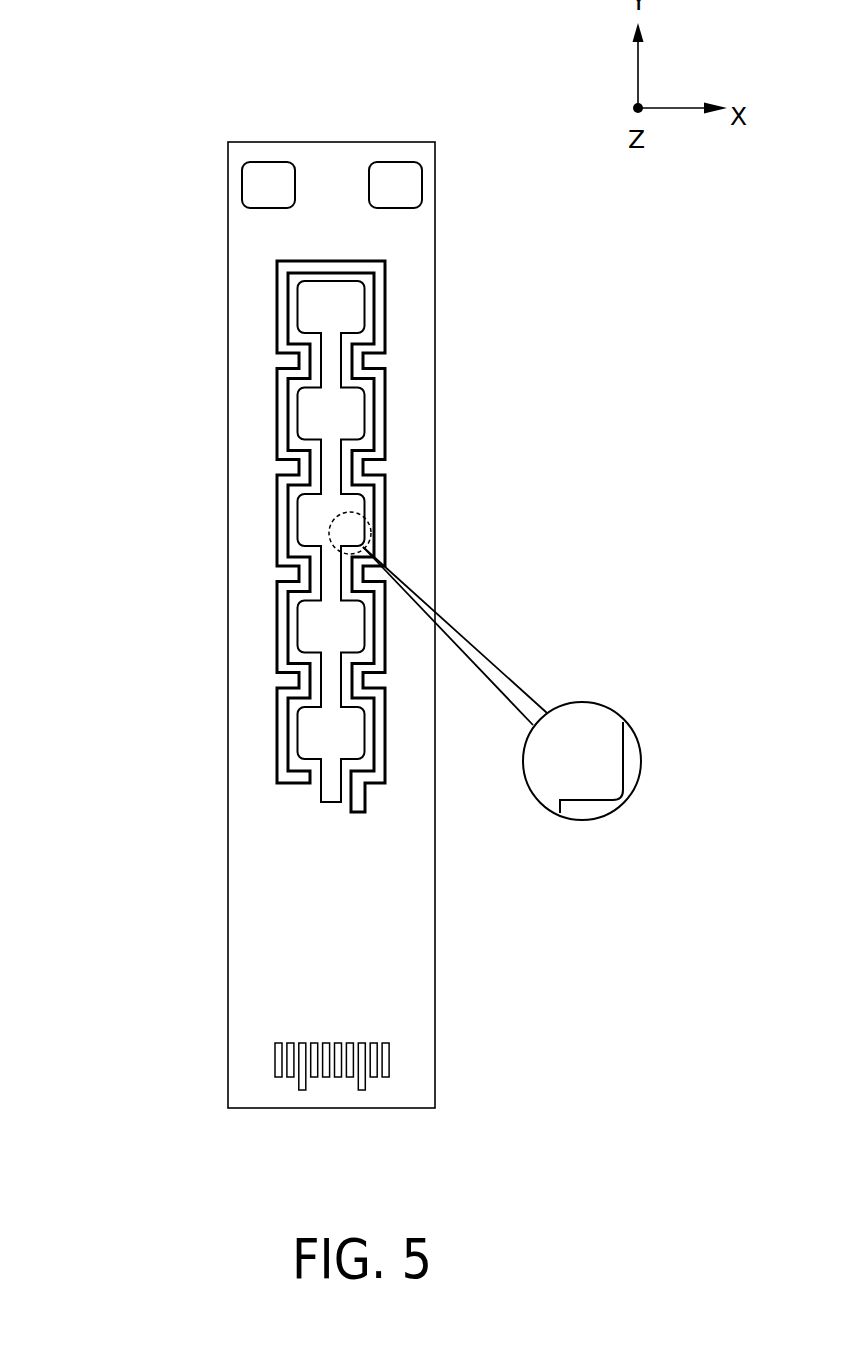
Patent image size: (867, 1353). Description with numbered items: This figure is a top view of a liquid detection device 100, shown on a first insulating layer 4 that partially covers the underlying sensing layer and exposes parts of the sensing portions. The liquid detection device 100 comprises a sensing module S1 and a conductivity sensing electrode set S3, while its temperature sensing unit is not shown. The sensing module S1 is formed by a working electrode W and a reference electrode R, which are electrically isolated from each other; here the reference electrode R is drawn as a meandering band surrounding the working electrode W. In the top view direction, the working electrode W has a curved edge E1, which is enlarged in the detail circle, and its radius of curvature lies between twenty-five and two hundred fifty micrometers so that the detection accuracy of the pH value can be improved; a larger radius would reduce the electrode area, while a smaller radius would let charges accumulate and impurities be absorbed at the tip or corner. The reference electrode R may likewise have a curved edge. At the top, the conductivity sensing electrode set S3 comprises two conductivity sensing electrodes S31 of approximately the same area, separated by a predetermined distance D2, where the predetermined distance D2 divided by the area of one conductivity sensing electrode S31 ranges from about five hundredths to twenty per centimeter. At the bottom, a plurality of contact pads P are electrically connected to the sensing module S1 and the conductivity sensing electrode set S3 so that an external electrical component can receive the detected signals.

The liquid detection device 100 is at (130, 88).
The first insulating layer 4 is at (418, 934).
The conductivity sensing electrode set S3 is at (328, 126).
The conductivity sensing electrode S31 is at (432, 96).
The predetermined distance D2 is at (367, 184).
The sensing module S1 is at (410, 536).
The reference electrode R is at (380, 309).
The working electrode W is at (488, 285).
The curved edge E1 is at (350, 552).
The contact pads P is at (361, 1090).